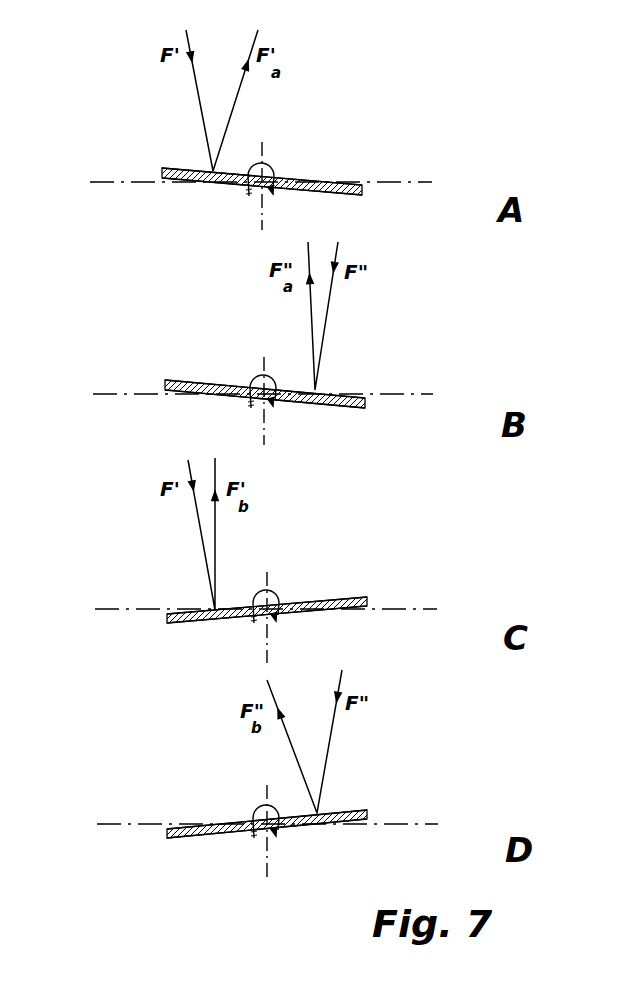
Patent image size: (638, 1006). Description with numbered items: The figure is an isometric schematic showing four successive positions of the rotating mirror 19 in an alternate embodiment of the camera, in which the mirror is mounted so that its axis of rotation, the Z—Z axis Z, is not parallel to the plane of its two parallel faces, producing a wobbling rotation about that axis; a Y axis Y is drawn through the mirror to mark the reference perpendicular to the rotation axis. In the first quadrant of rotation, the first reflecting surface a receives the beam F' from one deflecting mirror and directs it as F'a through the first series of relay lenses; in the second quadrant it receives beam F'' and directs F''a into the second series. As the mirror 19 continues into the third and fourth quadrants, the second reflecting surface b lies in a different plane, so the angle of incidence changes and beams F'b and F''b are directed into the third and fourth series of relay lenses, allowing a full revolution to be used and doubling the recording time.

The rotating mirror 19 is at (317, 183).
The first reflecting surface a is at (179, 169).
The second reflecting surface b is at (179, 181).
The Z—Z axis Z is at (262, 503).
The Y axis Y is at (265, 511).